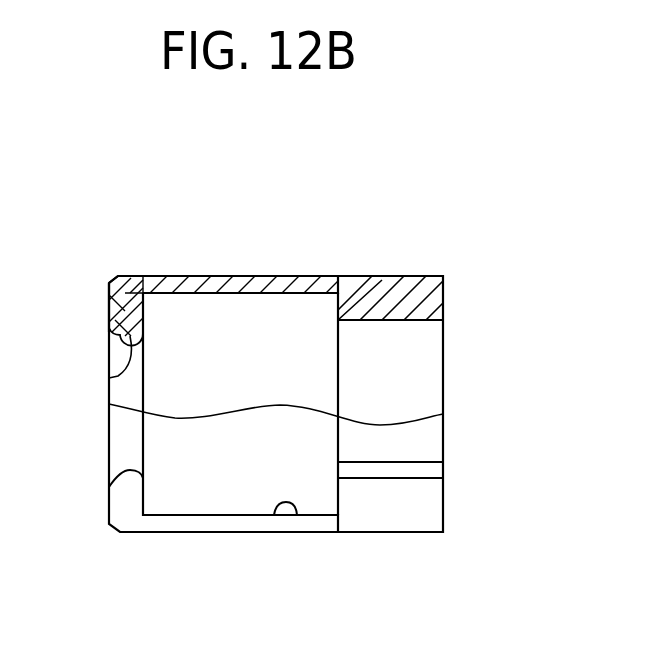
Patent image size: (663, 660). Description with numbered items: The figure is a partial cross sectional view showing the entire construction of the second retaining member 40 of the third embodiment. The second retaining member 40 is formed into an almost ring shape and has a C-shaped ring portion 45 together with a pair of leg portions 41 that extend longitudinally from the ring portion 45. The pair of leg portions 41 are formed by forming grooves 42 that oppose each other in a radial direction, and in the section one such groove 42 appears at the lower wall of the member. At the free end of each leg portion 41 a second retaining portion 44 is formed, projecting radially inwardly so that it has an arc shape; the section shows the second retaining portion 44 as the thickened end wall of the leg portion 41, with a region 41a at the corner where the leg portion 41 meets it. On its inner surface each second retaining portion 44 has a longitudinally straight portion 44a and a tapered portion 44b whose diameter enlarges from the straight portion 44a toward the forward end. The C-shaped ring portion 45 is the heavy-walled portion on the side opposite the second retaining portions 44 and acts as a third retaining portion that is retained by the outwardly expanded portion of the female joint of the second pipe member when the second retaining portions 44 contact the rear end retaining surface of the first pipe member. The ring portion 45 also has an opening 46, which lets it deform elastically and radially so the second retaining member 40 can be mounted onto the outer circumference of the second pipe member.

The second retaining member 40 is at (289, 268).
The leg portion 41 is at (237, 282).
The corner portion of plate 41a is at (143, 290).
The groove 42 is at (297, 517).
The second retaining portion 44 is at (109, 282).
The straight portion 44a is at (110, 377).
The tapered portion 44b is at (109, 335).
The C-shaped ring portion 45 is at (338, 304).
The opening 46 is at (398, 470).